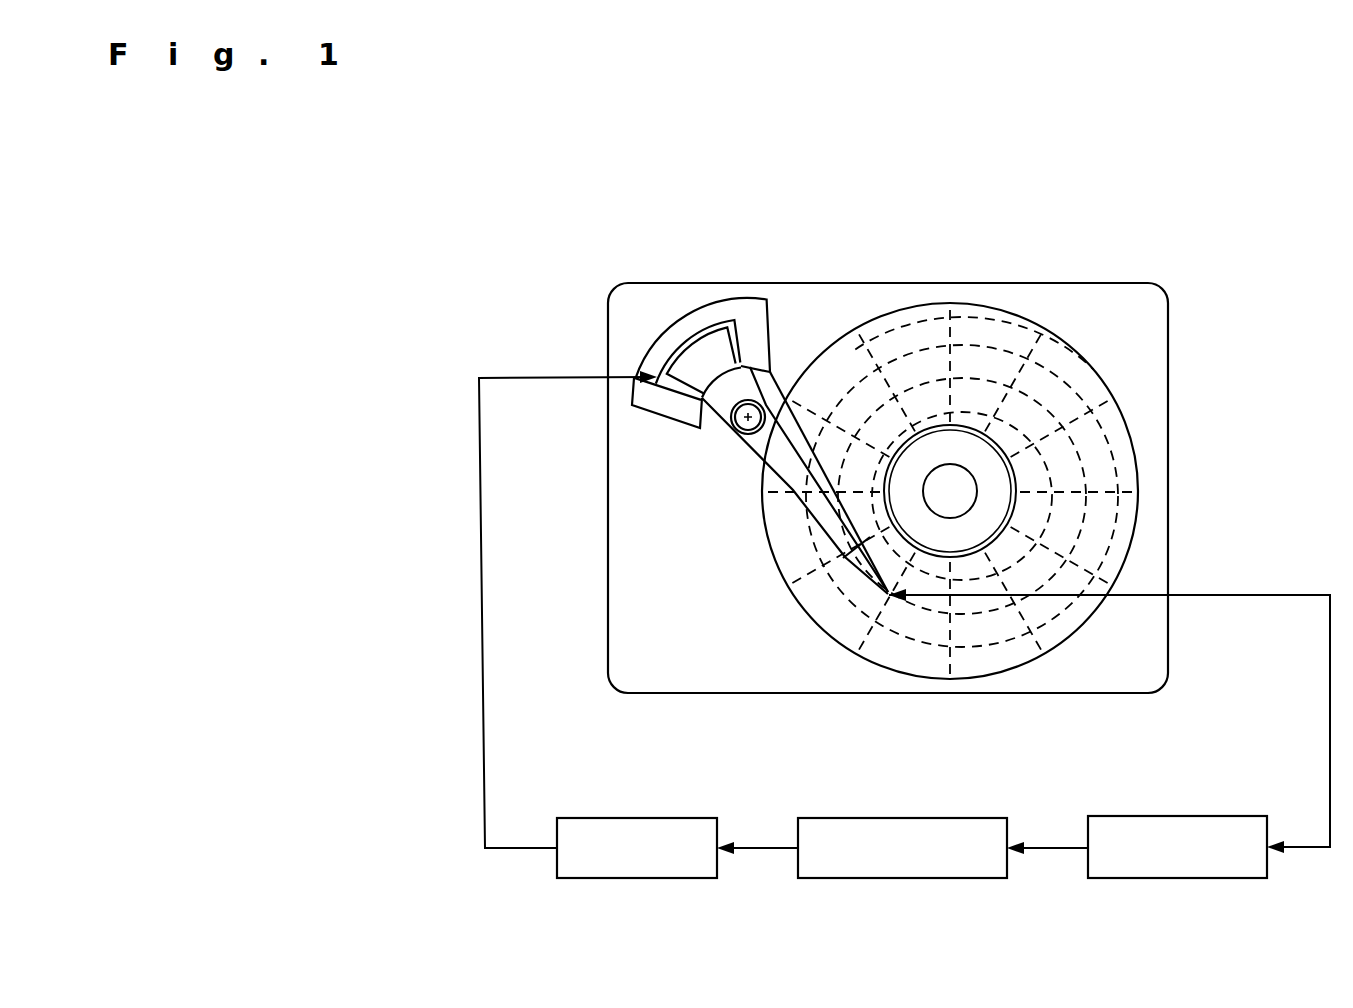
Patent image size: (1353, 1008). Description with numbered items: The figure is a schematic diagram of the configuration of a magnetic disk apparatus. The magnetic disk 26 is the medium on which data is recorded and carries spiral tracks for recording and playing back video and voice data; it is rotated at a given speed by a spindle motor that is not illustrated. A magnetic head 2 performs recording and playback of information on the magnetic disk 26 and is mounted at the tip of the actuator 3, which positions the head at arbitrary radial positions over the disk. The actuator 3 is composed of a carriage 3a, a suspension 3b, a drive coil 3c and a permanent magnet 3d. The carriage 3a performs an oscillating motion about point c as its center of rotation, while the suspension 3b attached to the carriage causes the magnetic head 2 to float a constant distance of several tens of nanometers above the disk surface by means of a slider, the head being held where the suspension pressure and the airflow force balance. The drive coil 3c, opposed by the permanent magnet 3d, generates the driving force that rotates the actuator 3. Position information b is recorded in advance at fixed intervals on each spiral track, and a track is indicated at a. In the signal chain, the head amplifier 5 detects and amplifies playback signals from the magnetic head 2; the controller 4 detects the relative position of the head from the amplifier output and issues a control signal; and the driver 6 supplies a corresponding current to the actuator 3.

The magnetic head 2 is at (889, 598).
The actuator 3 is at (719, 476).
The carriage 3a is at (793, 491).
The suspension 3b is at (862, 568).
The drive coil 3c is at (653, 373).
The permanent magnet 3d is at (757, 320).
The controller 4 is at (905, 879).
The head amplifier 5 is at (1195, 879).
The driver 6 is at (650, 879).
The magnetic disk 26 is at (1127, 437).
The track a is at (1090, 528).
The position information b is at (952, 330).
The point c is at (749, 416).